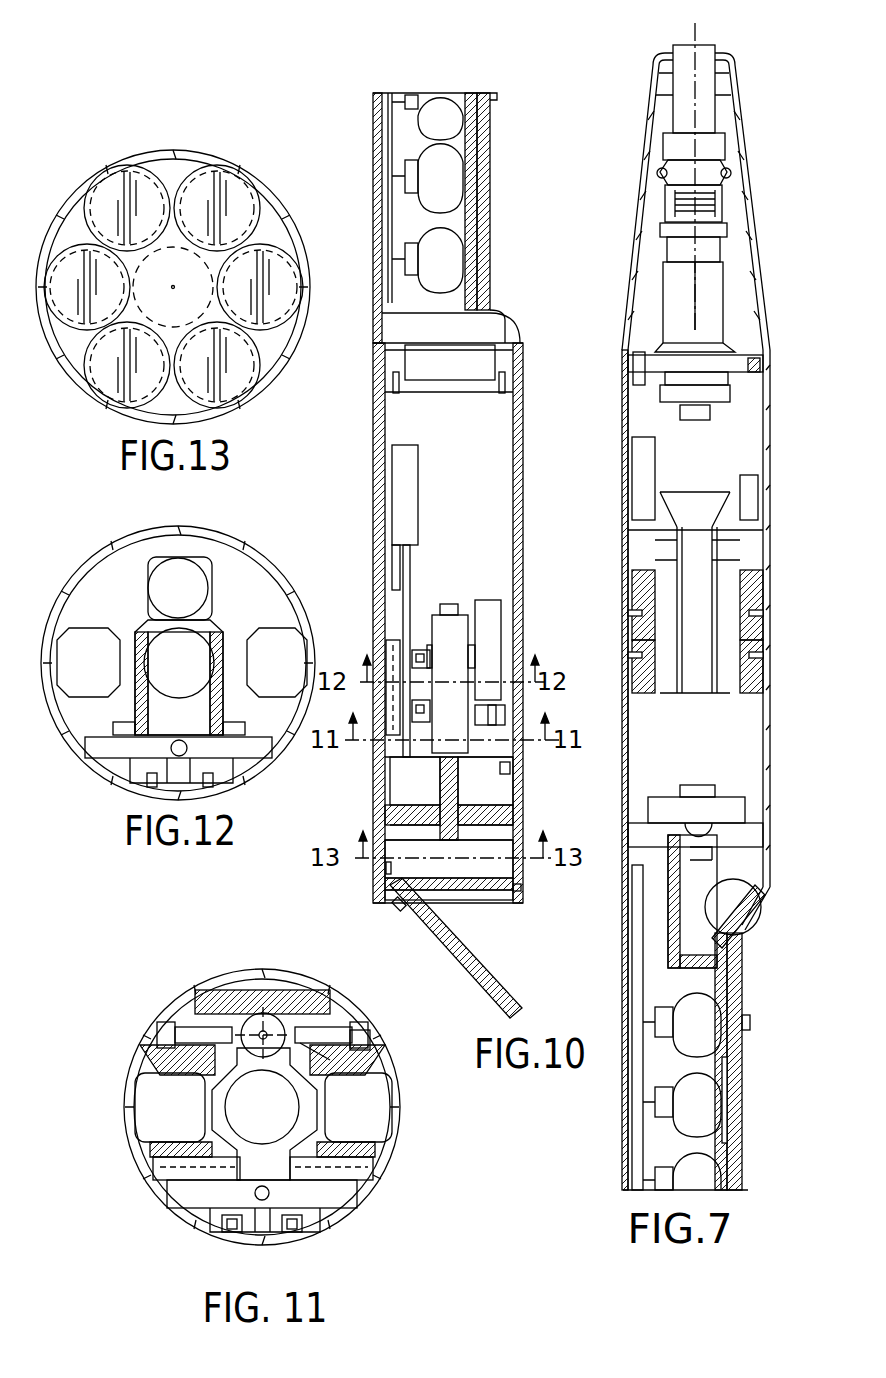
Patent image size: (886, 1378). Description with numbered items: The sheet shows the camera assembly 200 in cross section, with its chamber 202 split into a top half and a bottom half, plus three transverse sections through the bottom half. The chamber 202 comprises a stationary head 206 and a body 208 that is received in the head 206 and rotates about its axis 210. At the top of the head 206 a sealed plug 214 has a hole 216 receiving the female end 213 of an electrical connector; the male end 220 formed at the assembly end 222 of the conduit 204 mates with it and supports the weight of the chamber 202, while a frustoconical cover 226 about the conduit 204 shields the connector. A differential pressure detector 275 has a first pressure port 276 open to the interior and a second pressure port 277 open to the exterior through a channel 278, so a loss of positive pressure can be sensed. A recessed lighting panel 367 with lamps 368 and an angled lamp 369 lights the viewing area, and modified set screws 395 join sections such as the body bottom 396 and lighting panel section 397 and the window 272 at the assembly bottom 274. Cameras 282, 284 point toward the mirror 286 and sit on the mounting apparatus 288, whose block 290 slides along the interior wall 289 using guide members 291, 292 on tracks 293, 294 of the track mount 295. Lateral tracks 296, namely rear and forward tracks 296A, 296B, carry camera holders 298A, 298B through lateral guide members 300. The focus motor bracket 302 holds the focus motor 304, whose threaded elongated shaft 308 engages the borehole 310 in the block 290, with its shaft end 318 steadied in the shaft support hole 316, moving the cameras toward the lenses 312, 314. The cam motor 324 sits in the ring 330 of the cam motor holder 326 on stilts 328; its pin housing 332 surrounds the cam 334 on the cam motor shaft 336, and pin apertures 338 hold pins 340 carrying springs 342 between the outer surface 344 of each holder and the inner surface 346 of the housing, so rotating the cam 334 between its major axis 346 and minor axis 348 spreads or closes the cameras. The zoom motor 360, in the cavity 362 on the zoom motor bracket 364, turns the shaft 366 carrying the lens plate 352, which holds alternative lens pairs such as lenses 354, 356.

In FIG. 7, the assembly 200 is at (760, 995).
In FIG. 7, the chamber 202 is at (633, 738).
In FIG. 7, the conduit 204 is at (735, 55).
In FIG. 7, the head 206 is at (622, 520).
In FIG. 7, the body 208 is at (770, 833).
In FIG. 7, the axis 210 is at (695, 30).
In FIG. 7, the female end 213 is at (690, 420).
In FIG. 7, the plug 214 is at (745, 385).
In FIG. 7, the hole 216 is at (735, 395).
In FIG. 7, the male end 220 is at (663, 300).
In FIG. 7, the assembly end 222 is at (673, 110).
In FIG. 7, the cover 226 is at (725, 145).
In FIG. 10, the window 272 is at (450, 885).
In FIG. 10, the assembly bottom 274 is at (522, 900).
In FIG. 7, the differential pressure detector 275 is at (745, 805).
In FIG. 7, the first pressure port 276 is at (712, 787).
In FIG. 7, the second pressure port 277 is at (730, 835).
In FIG. 7, the channel 278 is at (740, 875).
In FIG. 12, the camera 282 is at (65, 698).
In FIG. 11, the camera 282 is at (145, 1135).
In FIG. 12, the camera 284 is at (290, 698).
In FIG. 11, the camera 284 is at (395, 1150).
In FIG. 10, the mirror 286 is at (503, 978).
In FIG. 10, the mounting apparatus 288 is at (484, 550).
In FIG. 10, the interior wall 289 is at (400, 600).
In FIG. 12, the block 290 is at (100, 748).
In FIG. 11, the block 290 is at (340, 1195).
In FIG. 10, the block 290 is at (395, 760).
In FIG. 11, the guide member 291 is at (205, 1215).
In FIG. 10, the guide member 291 is at (386, 725).
In FIG. 11, the guide member 292 is at (315, 1215).
In FIG. 11, the track 293 is at (225, 1225).
In FIG. 11, the track 294 is at (292, 1232).
In FIG. 11, the track mount 295 is at (247, 1235).
In FIG. 11, the lateral tracks 296 is at (263, 1122).
In FIG. 10, the rear lateral track 296A is at (412, 655).
In FIG. 10, the forward lateral track 296B is at (393, 680).
In FIG. 10, the camera holder 298A is at (430, 650).
In FIG. 11, the forward camera holder 298B is at (157, 1040).
In FIG. 10, the forward camera holder 298B is at (513, 805).
In FIG. 11, the lateral guide members 300 is at (165, 1175).
In FIG. 10, the lateral guide members 300 is at (415, 781).
In FIG. 10, the focus motor bracket 302 is at (392, 590).
In FIG. 10, the focus motor 304 is at (418, 490).
In FIG. 10, the elongated shaft 308 is at (410, 560).
In FIG. 11, the borehole 310 is at (270, 1193).
In FIG. 13, the lens 312 is at (97, 283).
In FIG. 10, the lens 312 is at (400, 870).
In FIG. 13, the lens 314 is at (302, 312).
In FIG. 10, the lens 314 is at (500, 840).
In FIG. 10, the shaft support hole 316 is at (385, 800).
In FIG. 10, the shaft end 318 is at (390, 790).
In FIG. 12, the cam motor 324 is at (160, 590).
In FIG. 10, the cam motor 324 is at (502, 620).
In FIG. 12, the cam motor holder 326 is at (205, 560).
In FIG. 10, the cam motor holder 326 is at (503, 660).
In FIG. 12, the stilts 328 is at (140, 640).
In FIG. 12, the ring 330 is at (212, 635).
In FIG. 11, the pin housing 332 is at (175, 1035).
In FIG. 10, the pin housing 332 is at (505, 712).
In FIG. 11, the cam 334 is at (275, 1000).
In FIG. 10, the cam 334 is at (513, 780).
In FIG. 10, the cam motor shaft 336 is at (507, 770).
In FIG. 11, the pin apertures 338 is at (360, 1050).
In FIG. 11, the pins 340 is at (355, 1045).
In FIG. 11, the spring 342 is at (200, 1020).
In FIG. 11, the outer surface 344 is at (170, 1122).
In FIG. 11, the inner surface 346 is at (263, 1107).
In FIG. 11, the minor axis 348 is at (268, 990).
In FIG. 13, the lens plate 352 is at (272, 228).
In FIG. 10, the lens plate 352 is at (449, 859).
In FIG. 13, the lens 354 is at (112, 190).
In FIG. 13, the lens 356 is at (240, 382).
In FIG. 12, the zoom motor 360 is at (179, 663).
In FIG. 11, the zoom motor 360 is at (264, 1114).
In FIG. 10, the zoom motor 360 is at (470, 625).
In FIG. 11, the cavity 362 is at (360, 1122).
In FIG. 10, the zoom motor bracket 364 is at (395, 820).
In FIG. 10, the shaft 366 is at (476, 798).
In FIG. 7, the lighting panel 367 is at (735, 960).
In FIG. 7, the lamps 368 is at (700, 1030).
In FIG. 7, the angled lamp 369 is at (755, 900).
In FIG. 10, the modified set screws 395 is at (505, 380).
In FIG. 7, the modified set screws 395 is at (762, 362).
In FIG. 10, the body bottom 396 is at (523, 455).
In FIG. 10, the lighting panel section 397 is at (373, 135).